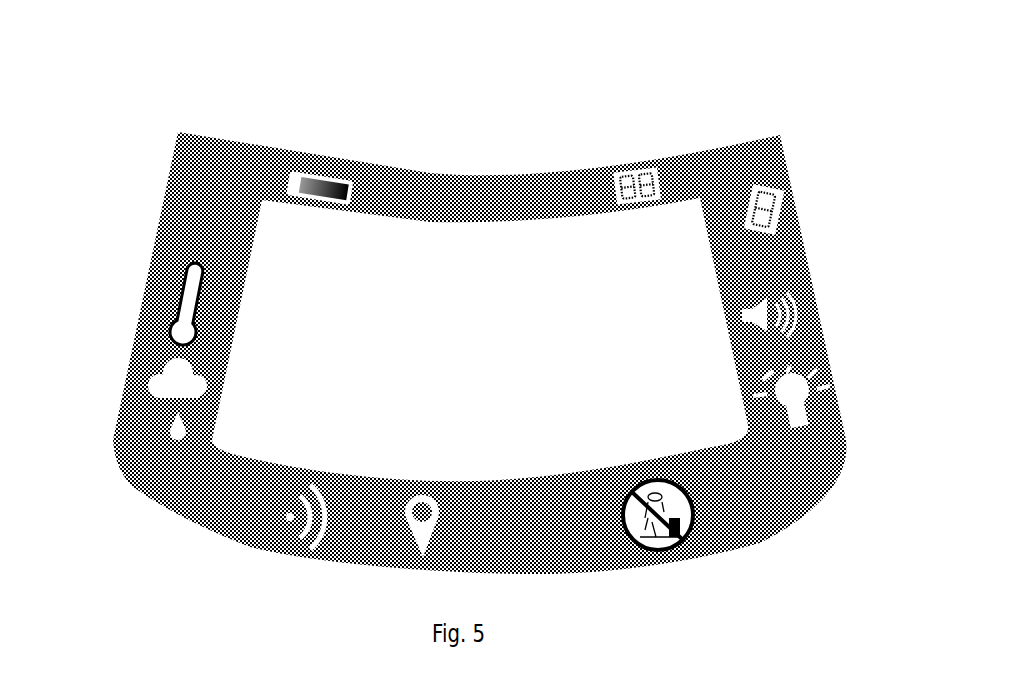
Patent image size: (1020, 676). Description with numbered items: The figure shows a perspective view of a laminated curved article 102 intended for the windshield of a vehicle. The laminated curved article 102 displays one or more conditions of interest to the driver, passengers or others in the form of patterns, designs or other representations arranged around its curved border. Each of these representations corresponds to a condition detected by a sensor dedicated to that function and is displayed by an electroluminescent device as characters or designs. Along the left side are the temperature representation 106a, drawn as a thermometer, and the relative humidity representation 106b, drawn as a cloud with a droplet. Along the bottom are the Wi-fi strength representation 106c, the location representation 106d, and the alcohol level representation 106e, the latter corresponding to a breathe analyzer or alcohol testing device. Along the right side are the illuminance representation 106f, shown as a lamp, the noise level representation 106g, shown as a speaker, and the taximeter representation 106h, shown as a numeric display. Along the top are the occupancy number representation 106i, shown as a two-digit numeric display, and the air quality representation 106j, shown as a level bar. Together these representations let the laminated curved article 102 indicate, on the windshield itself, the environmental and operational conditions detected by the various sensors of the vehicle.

The laminated curved article 102 is at (458, 143).
The temperature representation 106a is at (178, 300).
The relative humidity representation 106b is at (157, 380).
The Wi-fi strength representation 106c is at (303, 518).
The location representation 106d is at (423, 535).
The alcohol level representation 106e is at (678, 547).
The illuminance representation 106f is at (808, 397).
The noise level representation 106g is at (798, 308).
The taximeter representation 106h is at (777, 205).
The occupancy number representation 106i is at (643, 172).
The air quality representation 106j is at (323, 183).